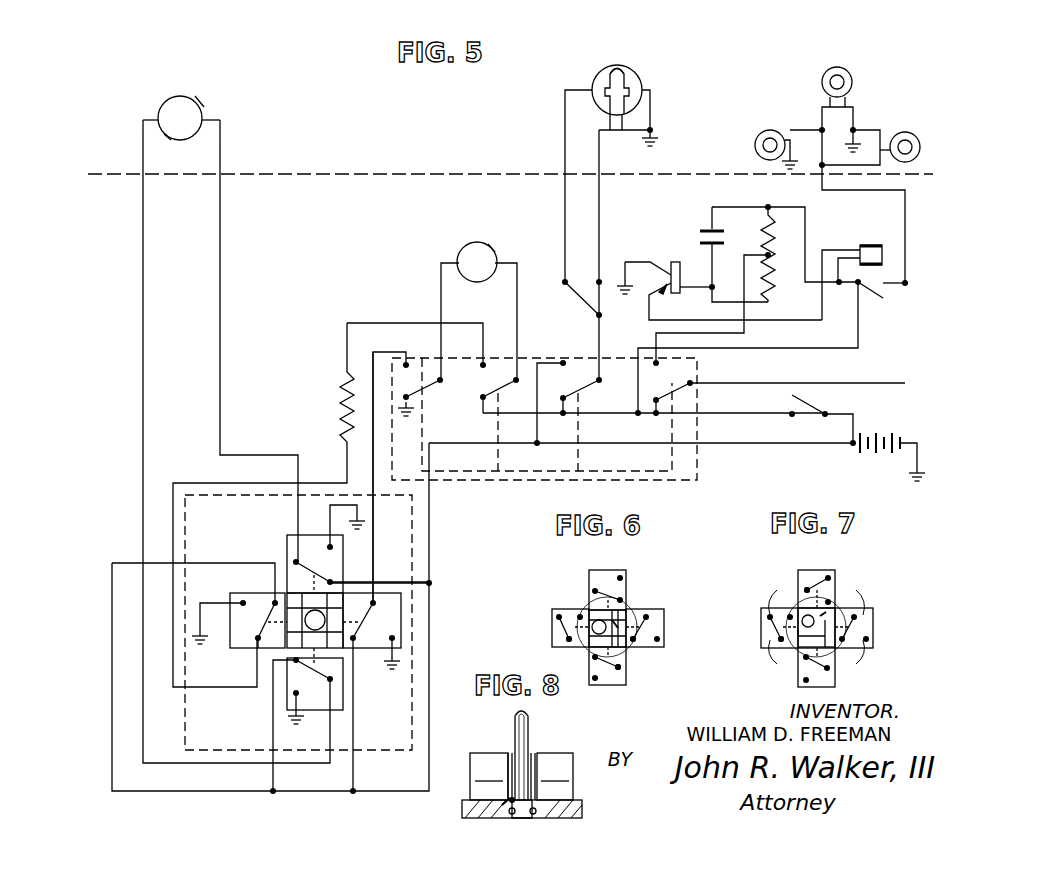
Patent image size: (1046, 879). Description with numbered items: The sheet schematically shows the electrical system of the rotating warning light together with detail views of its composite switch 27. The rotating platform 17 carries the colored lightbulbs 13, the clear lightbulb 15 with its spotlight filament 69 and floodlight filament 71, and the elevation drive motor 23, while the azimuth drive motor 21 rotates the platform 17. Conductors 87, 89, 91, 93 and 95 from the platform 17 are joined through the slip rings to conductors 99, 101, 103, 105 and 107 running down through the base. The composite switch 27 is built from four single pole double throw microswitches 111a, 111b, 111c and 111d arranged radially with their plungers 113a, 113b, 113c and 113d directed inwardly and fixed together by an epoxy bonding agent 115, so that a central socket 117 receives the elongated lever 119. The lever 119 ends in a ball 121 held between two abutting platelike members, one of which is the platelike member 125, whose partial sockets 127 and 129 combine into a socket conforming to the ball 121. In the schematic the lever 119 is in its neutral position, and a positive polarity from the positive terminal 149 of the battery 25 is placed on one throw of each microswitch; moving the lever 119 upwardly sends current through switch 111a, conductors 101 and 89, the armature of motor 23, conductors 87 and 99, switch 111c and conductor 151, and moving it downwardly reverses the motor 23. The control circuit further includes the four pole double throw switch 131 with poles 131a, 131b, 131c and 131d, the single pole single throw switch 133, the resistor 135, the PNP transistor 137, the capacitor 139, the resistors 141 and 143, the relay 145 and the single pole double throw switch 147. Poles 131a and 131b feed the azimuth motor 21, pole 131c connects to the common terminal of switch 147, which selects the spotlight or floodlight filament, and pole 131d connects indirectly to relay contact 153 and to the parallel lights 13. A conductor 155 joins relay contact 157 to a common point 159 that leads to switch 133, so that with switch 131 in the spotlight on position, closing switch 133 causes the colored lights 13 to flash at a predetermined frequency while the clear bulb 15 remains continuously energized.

In FIG. 5, the colored lightbulbs 13 is at (846, 75).
In FIG. 5, the clear lightbulb 15 is at (630, 80).
In FIG. 5, the rotating platform 17 is at (350, 174).
In FIG. 5, the azimuth drive motor 21 is at (475, 256).
In FIG. 5, the elevation drive motor 23 is at (178, 112).
In FIG. 5, the battery 25 is at (880, 435).
In FIG. 5, the composite switch 27 is at (155, 512).
In FIG. 6, the composite switch 27 is at (648, 575).
In FIG. 7, the composite switch 27 is at (874, 575).
In FIG. 8, the composite switch 27 is at (475, 744).
In FIG. 5, the first filament 69 is at (612, 66).
In FIG. 5, the second filament 71 is at (652, 100).
In FIG. 5, the conductor 87 is at (143, 153).
In FIG. 5, the conductor 89 is at (220, 153).
In FIG. 5, the conductor 91 is at (565, 150).
In FIG. 5, the conductor 93 is at (599, 166).
In FIG. 5, the conductor 95 is at (820, 166).
In FIG. 5, the conductor 99 is at (143, 248).
In FIG. 5, the conductor 101 is at (220, 252).
In FIG. 5, the conductor 103 is at (565, 225).
In FIG. 5, the conductor 105 is at (599, 222).
In FIG. 5, the conductor 107 is at (870, 190).
In FIG. 5, the microswitch 111a is at (290, 545).
In FIG. 6, the microswitch 111a is at (596, 575).
In FIG. 7, the microswitch 111a is at (812, 575).
In FIG. 5, the microswitch 111b is at (401, 615).
In FIG. 6, the microswitch 111b is at (664, 622).
In FIG. 7, the microswitch 111b is at (873, 623).
In FIG. 8, the microswitch 111b is at (555, 776).
In FIG. 5, the microswitch 111c is at (345, 700).
In FIG. 6, the microswitch 111c is at (606, 682).
In FIG. 7, the microswitch 111c is at (830, 678).
In FIG. 5, the microswitch 111d is at (238, 648).
In FIG. 6, the microswitch 111d is at (552, 628).
In FIG. 7, the microswitch 111d is at (762, 638).
In FIG. 8, the microswitch 111d is at (489, 776).
In FIG. 7, the plunger 113a is at (806, 588).
In FIG. 6, the plunger 113b is at (628, 628).
In FIG. 8, the plunger 113b is at (535, 760).
In FIG. 6, the plunger 113c is at (627, 655).
In FIG. 6, the plunger 113d is at (590, 642).
In FIG. 7, the plunger 113d is at (788, 645).
In FIG. 8, the plunger 113d is at (510, 752).
In FIG. 7, the epoxy bonding agent 115 is at (790, 592).
In FIG. 6, the socket 117 is at (618, 625).
In FIG. 7, the socket 117 is at (822, 617).
In FIG. 8, the socket 117 is at (500, 808).
In FIG. 5, the lever 119 is at (300, 630).
In FIG. 6, the lever 119 is at (597, 621).
In FIG. 7, the lever 119 is at (802, 618).
In FIG. 8, the lever 119 is at (528, 718).
In FIG. 8, the ball 121 is at (528, 818).
In FIG. 8, the platelike member 125 is at (577, 810).
In FIG. 8, the partial socket 127 is at (512, 818).
In FIG. 8, the partial socket 129 is at (536, 818).
In FIG. 5, the four pole double throw switch 131 is at (420, 360).
In FIG. 5, the first poles 131a is at (445, 385).
In FIG. 5, the second poles 131b is at (490, 388).
In FIG. 5, the third poles 131c is at (575, 378).
In FIG. 5, the fourth poles 131d is at (680, 372).
In FIG. 5, the single pole single throw switch 133 is at (807, 432).
In FIG. 5, the resistor 135 is at (340, 400).
In FIG. 5, the PNP transistor 137 is at (671, 268).
In FIG. 5, the capacitor 139 is at (710, 228).
In FIG. 5, the resistor 141 is at (775, 242).
In FIG. 5, the resistor 143 is at (775, 286).
In FIG. 5, the relay 145 is at (883, 255).
In FIG. 5, the single pole double throw switch 147 is at (570, 293).
In FIG. 5, the positive terminal 149 is at (853, 450).
In FIG. 5, the conductor 151 is at (272, 775).
In FIG. 5, the contact 153 is at (888, 282).
In FIG. 5, the conductor 155 is at (800, 348).
In FIG. 5, the contact 157 is at (858, 290).
In FIG. 5, the common point 159 is at (650, 418).